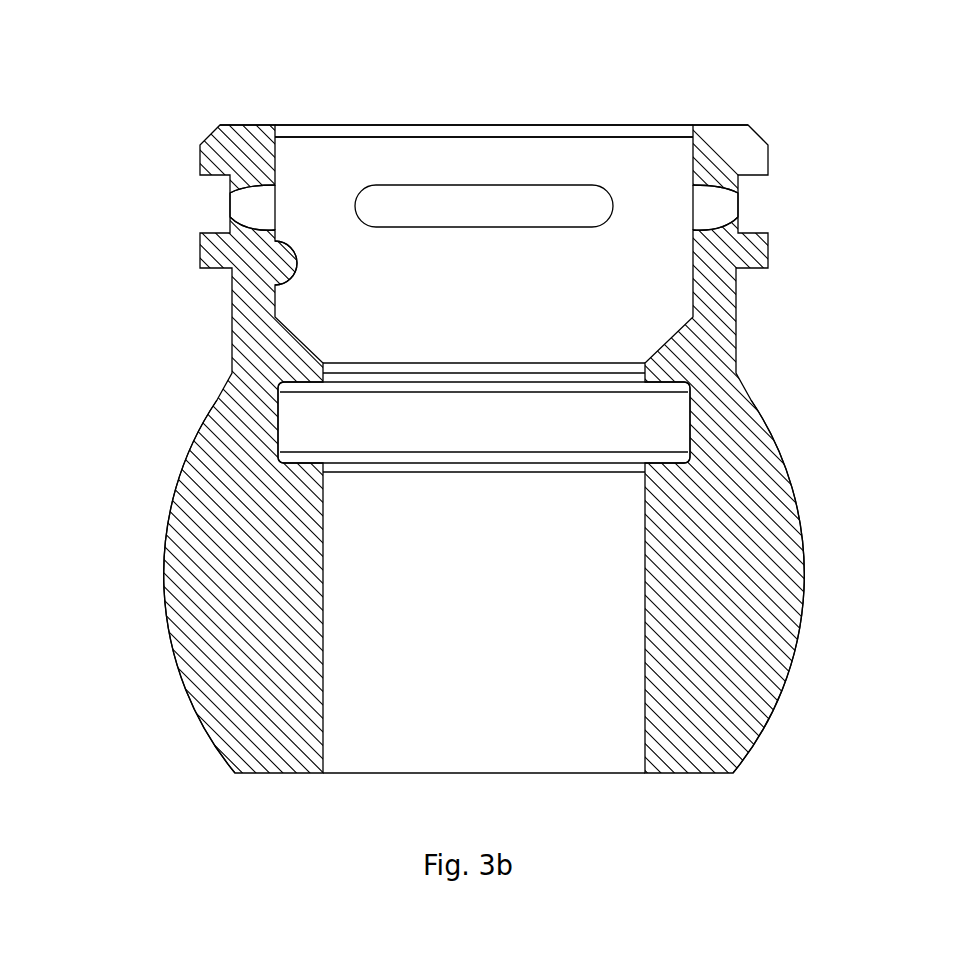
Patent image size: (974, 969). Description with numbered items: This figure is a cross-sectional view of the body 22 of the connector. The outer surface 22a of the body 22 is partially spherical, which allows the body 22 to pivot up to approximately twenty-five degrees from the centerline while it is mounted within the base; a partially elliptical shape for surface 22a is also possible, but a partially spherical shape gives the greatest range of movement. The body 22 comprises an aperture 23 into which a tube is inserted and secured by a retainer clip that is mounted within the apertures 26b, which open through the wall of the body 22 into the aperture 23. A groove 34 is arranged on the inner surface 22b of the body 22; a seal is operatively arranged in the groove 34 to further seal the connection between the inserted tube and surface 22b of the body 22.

The body 22 is at (807, 98).
The surface 22a is at (802, 535).
The surface 22b is at (275, 241).
The aperture 23 is at (390, 118).
The apertures 26b is at (498, 202).
The groove 34 is at (273, 422).